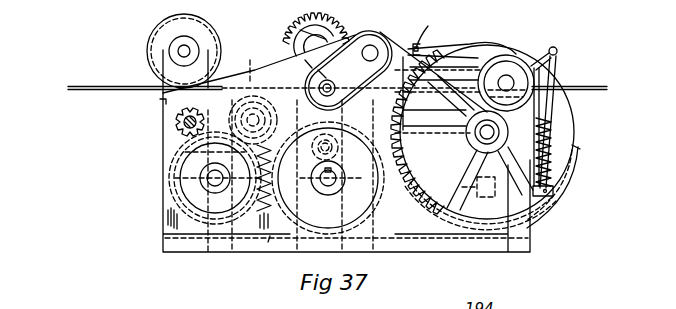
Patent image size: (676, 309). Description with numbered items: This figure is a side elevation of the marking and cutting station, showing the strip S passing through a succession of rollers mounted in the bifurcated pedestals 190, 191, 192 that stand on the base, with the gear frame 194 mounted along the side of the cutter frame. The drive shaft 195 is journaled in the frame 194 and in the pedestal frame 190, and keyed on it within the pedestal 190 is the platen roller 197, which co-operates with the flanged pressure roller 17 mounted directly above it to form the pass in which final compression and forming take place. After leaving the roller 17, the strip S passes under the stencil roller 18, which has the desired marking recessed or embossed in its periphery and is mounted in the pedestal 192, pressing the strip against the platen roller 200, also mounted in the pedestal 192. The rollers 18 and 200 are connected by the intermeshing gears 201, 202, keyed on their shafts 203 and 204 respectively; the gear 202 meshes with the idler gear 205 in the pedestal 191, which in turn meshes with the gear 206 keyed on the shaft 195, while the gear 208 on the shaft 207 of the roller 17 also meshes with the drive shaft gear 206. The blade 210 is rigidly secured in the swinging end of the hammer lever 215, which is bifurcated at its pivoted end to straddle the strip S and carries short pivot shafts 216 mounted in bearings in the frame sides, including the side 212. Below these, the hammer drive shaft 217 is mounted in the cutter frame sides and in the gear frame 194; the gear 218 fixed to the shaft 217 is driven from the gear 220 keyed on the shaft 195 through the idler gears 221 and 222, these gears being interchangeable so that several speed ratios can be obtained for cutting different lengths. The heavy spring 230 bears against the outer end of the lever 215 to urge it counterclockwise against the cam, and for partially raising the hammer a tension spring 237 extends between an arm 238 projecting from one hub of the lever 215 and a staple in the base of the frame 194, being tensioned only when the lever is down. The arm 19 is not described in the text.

The strip S is at (68, 88).
The flanged pressure roller 17 is at (197, 22).
The stencil roller 18 is at (330, 33).
The arm 19 is at (477, 35).
The bifurcated pedestal 190 is at (172, 72).
The bifurcated pedestal 191 is at (268, 252).
The bifurcated pedestal 192 is at (343, 40).
The gear frame 194 is at (180, 230).
The drive shaft 195 is at (185, 126).
The platen roller 197 is at (161, 122).
The platen roller 200 is at (344, 152).
The gear 201 is at (304, 26).
The gear 202 is at (314, 170).
The shaft 203 is at (314, 42).
The shaft 204 is at (340, 149).
The idler gear 205 is at (269, 66).
The gear 206 is at (160, 100).
The shaft 207 is at (183, 50).
The gear 208 is at (181, 17).
The blade 210 is at (392, 57).
The frame side 212 is at (532, 121).
The hammer lever 215 is at (497, 48).
The pivot shaft 216 is at (508, 81).
The hammer drive shaft 217 is at (466, 140).
The gear 218 is at (575, 163).
The gear 220 is at (190, 137).
The idler gear 221 is at (187, 177).
The idler gear 222 is at (352, 226).
The heavy spring 230 is at (434, 39).
The tension spring 237 is at (550, 135).
The arm 238 is at (558, 52).